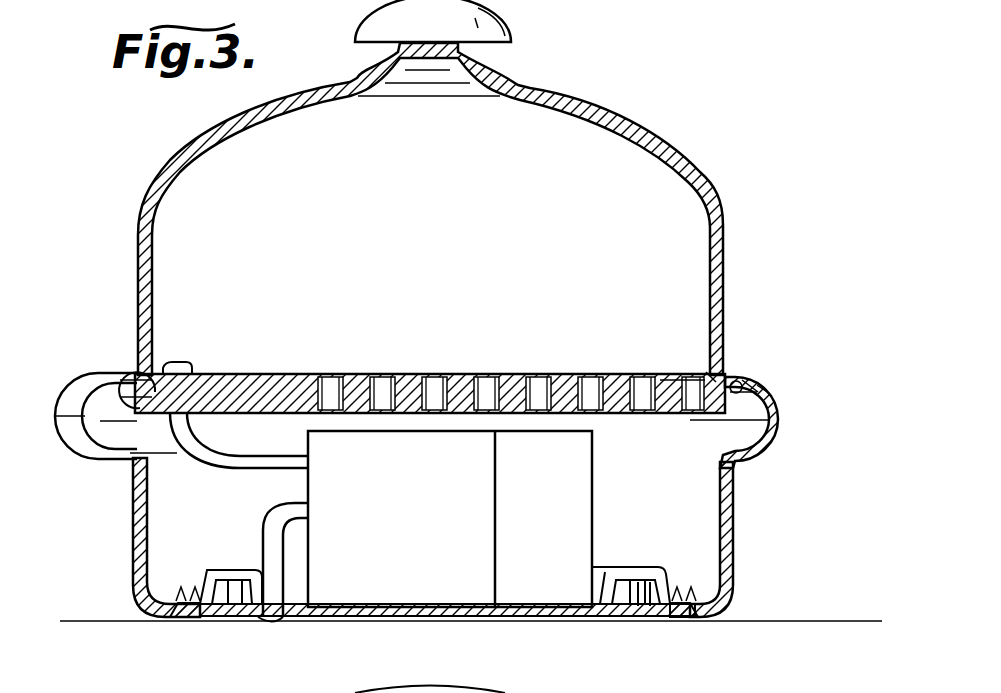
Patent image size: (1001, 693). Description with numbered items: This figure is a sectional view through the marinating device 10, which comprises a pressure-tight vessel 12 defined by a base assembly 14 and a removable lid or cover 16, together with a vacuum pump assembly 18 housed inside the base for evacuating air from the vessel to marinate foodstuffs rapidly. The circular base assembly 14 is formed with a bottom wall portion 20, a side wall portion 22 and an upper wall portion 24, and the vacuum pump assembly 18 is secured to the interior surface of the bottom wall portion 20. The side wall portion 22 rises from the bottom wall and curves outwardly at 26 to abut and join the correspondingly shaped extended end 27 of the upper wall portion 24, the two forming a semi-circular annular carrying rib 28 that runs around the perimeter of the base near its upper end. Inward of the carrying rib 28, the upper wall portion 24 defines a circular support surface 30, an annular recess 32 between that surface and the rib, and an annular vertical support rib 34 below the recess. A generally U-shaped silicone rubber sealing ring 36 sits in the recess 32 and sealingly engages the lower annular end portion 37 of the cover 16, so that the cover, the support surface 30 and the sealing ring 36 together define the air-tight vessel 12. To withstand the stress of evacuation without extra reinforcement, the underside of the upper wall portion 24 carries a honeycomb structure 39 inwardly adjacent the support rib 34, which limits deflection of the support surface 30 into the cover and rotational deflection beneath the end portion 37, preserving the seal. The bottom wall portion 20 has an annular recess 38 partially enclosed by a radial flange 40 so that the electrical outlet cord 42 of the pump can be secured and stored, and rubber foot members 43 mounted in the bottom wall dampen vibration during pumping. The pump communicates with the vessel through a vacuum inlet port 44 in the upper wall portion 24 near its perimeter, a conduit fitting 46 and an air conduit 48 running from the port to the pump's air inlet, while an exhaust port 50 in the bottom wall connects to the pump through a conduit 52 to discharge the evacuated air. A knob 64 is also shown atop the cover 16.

The marinating device 10 is at (765, 104).
The pressure-tight vessel 12 is at (776, 273).
The base assembly 14 is at (737, 478).
The removable lid or cover 16 is at (723, 207).
The vacuum pump assembly 18 is at (592, 527).
The bottom wall portion 20 is at (500, 600).
The side wall portion 22 is at (734, 519).
The upper wall portion 24 is at (620, 413).
The outwardly curved portion of side wall 26 is at (776, 459).
The extended end of upper wall portion 27 is at (772, 395).
The carrying rib 28 is at (787, 412).
The support surface 30 is at (670, 374).
The lower annular end portion of cover 37 is at (720, 375).
The annular recess 32 is at (749, 380).
The annular vertical support rib 34 is at (760, 388).
The sealing ring 36 is at (741, 378).
The annular recess 38 is at (645, 590).
The honeycomb structure 39 is at (545, 406).
The radial flange 40 is at (636, 609).
The electrical outlet cord 42 is at (643, 602).
The rubber foot members 43 is at (693, 619).
The vacuum inlet port 44 is at (197, 374).
The conduit fitting 46 is at (148, 380).
The air conduit 48 is at (232, 465).
The exhaust port 50 is at (266, 616).
The conduit 52 is at (265, 548).
The knob 64 is at (510, 12).